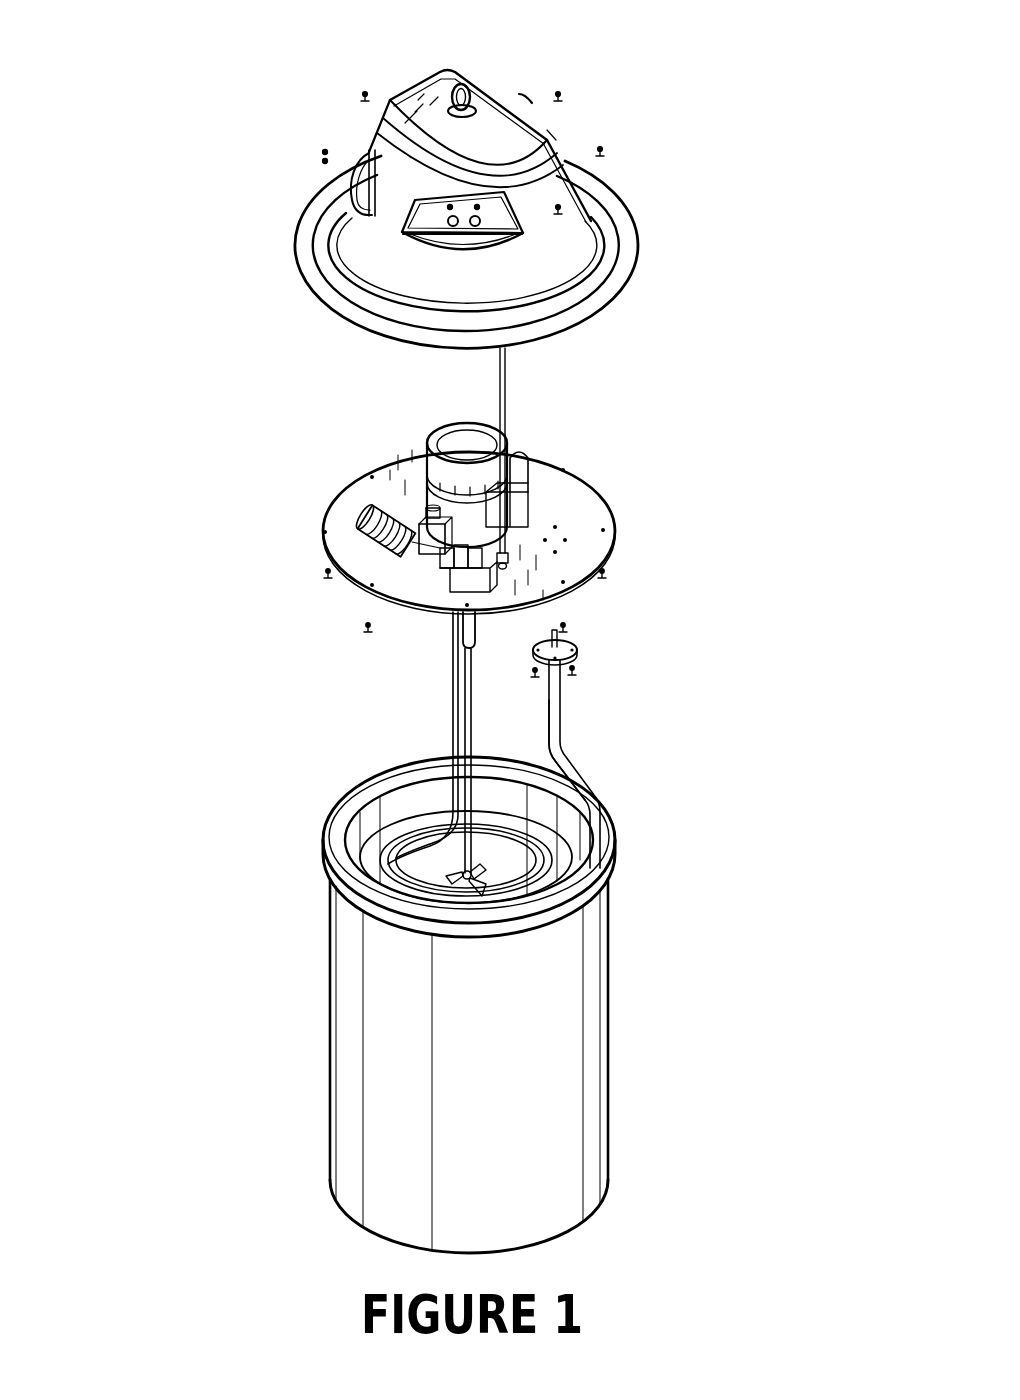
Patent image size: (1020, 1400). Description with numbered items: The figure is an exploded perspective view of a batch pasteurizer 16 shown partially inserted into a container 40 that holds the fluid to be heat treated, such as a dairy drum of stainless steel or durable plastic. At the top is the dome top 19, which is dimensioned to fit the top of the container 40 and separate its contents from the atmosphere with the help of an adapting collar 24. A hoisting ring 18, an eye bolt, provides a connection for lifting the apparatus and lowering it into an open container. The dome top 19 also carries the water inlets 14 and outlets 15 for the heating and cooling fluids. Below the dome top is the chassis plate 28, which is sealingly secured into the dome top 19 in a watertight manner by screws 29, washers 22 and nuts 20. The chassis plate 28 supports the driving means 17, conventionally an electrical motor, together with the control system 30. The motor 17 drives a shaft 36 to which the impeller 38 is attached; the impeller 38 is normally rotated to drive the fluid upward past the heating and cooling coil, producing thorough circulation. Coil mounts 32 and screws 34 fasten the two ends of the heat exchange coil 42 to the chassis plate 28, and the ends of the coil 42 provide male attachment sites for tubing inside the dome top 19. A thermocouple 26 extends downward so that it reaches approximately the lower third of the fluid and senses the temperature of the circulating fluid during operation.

The water inlet 14 is at (350, 168).
The water outlet 15 is at (518, 194).
The batch pasteurizer 16 is at (685, 243).
The driving means 17 is at (420, 460).
The hoisting ring 18 is at (458, 83).
The dome top 19 is at (552, 125).
The nut 20 is at (321, 150).
The washer 22 is at (322, 158).
The adapting collar 24 is at (358, 327).
The thermocouple 26 is at (505, 393).
The chassis plate 28 is at (613, 520).
The screw 29 is at (364, 626).
The control system 30 is at (406, 560).
The coil mount 32 is at (578, 642).
The screw 34 is at (573, 672).
The shaft 36 is at (466, 815).
The impeller 38 is at (457, 883).
The container 40 is at (330, 920).
The heat exchange coil 42 is at (560, 730).